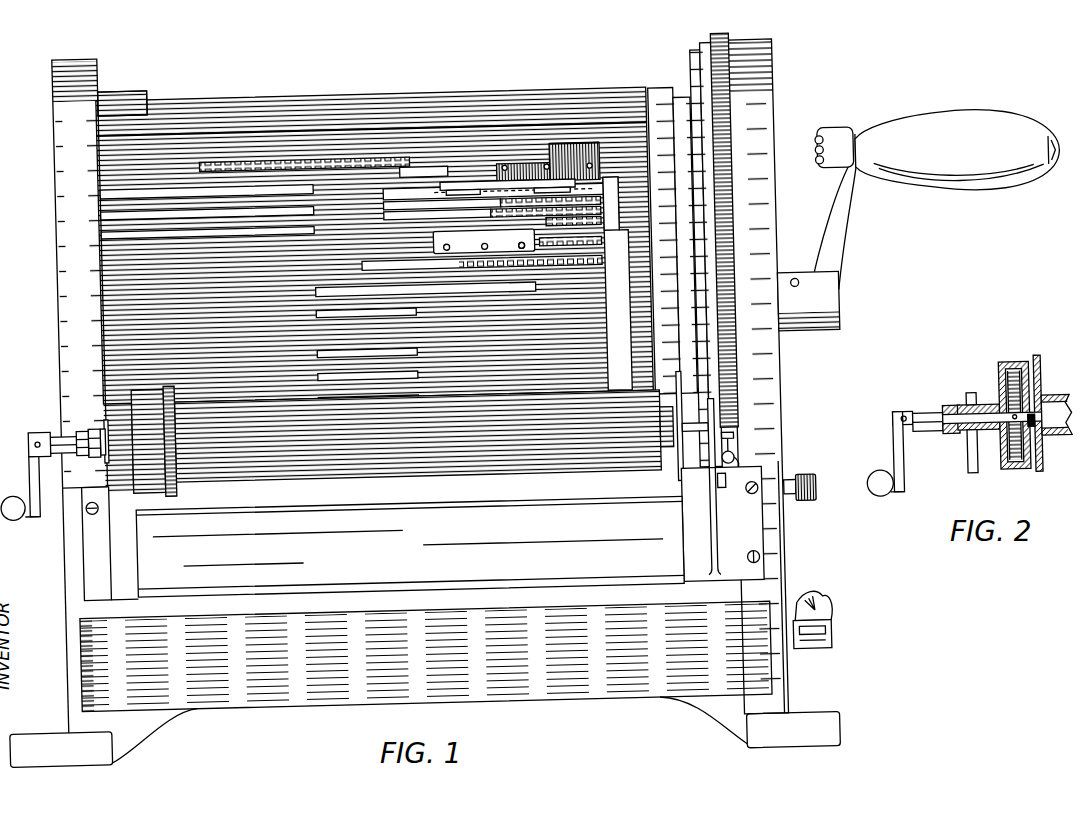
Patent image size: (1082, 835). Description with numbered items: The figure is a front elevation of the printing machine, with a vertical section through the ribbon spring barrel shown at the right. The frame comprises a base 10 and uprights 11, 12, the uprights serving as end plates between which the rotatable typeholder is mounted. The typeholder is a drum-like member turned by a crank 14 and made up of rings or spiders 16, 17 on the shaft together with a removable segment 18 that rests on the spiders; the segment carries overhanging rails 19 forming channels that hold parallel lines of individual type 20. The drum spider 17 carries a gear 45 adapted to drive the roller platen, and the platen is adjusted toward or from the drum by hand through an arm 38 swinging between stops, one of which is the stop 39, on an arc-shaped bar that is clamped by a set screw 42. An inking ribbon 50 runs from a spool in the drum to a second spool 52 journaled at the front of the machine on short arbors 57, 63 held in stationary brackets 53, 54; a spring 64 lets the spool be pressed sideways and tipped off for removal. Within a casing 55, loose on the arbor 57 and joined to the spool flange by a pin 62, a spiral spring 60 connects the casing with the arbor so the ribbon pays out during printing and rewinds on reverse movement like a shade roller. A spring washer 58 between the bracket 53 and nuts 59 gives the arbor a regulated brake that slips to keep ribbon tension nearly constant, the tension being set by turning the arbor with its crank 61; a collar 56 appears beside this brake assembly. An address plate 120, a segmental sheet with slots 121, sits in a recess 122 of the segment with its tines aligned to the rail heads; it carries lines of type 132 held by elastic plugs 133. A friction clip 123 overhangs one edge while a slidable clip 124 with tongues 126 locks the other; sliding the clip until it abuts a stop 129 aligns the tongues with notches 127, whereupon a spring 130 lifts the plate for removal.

In FIG. 1, the base 10 is at (460, 682).
In FIG. 1, the upright 11 is at (99, 412).
In FIG. 1, the upright 12 is at (757, 376).
In FIG. 1, the crank 14 is at (834, 268).
In FIG. 1, the ring or spider 16 is at (156, 88).
In FIG. 1, the ring or spider 17 is at (699, 72).
In FIG. 1, the removable segment 18 is at (149, 311).
In FIG. 1, the rail 19 is at (242, 125).
In FIG. 1, the type 20 is at (367, 150).
In FIG. 1, the arm 38 is at (822, 612).
In FIG. 1, the stop 39 is at (809, 660).
In FIG. 1, the set screw 42 is at (811, 492).
In FIG. 1, the gear 45 is at (731, 47).
In FIG. 1, the inking ribbon 50 is at (402, 435).
In FIG. 1, the spool 52 is at (675, 486).
In FIG. 2, the spool 52 is at (1042, 366).
In FIG. 1, the bracket 53 is at (107, 520).
In FIG. 2, the bracket 53 is at (972, 471).
In FIG. 1, the bracket 54 is at (714, 521).
In FIG. 1, the casing 55 is at (157, 441).
In FIG. 2, the casing 55 is at (1015, 466).
In FIG. 1, the collar 56 is at (117, 441).
In FIG. 1, the arbor 57 is at (62, 438).
In FIG. 2, the arbor 57 is at (930, 428).
In FIG. 1, the spring washer 58 is at (97, 420).
In FIG. 2, the spring washer 58 is at (960, 435).
In FIG. 1, the nut 59 is at (87, 424).
In FIG. 2, the nut 59 is at (950, 405).
In FIG. 2, the spiral spring 60 is at (1003, 376).
In FIG. 1, the crank 61 is at (36, 468).
In FIG. 2, the crank 61 is at (895, 448).
In FIG. 2, the pin 62 is at (1036, 392).
In FIG. 1, the arbor 63 is at (699, 434).
In FIG. 1, the spring 64 is at (734, 464).
In FIG. 1, the address plate 120 is at (603, 204).
In FIG. 1, the slot 121 is at (498, 191).
In FIG. 1, the recess 122 is at (346, 198).
In FIG. 1, the clip 123 is at (484, 241).
In FIG. 1, the slidable clip 124 is at (599, 161).
In FIG. 1, the tongue 126 is at (591, 172).
In FIG. 1, the notch 127 is at (478, 186).
In FIG. 1, the stop 129 is at (431, 177).
In FIG. 1, the spring 130 is at (336, 195).
In FIG. 1, the line of type 132 is at (617, 284).
In FIG. 1, the elastic plug 133 is at (508, 242).